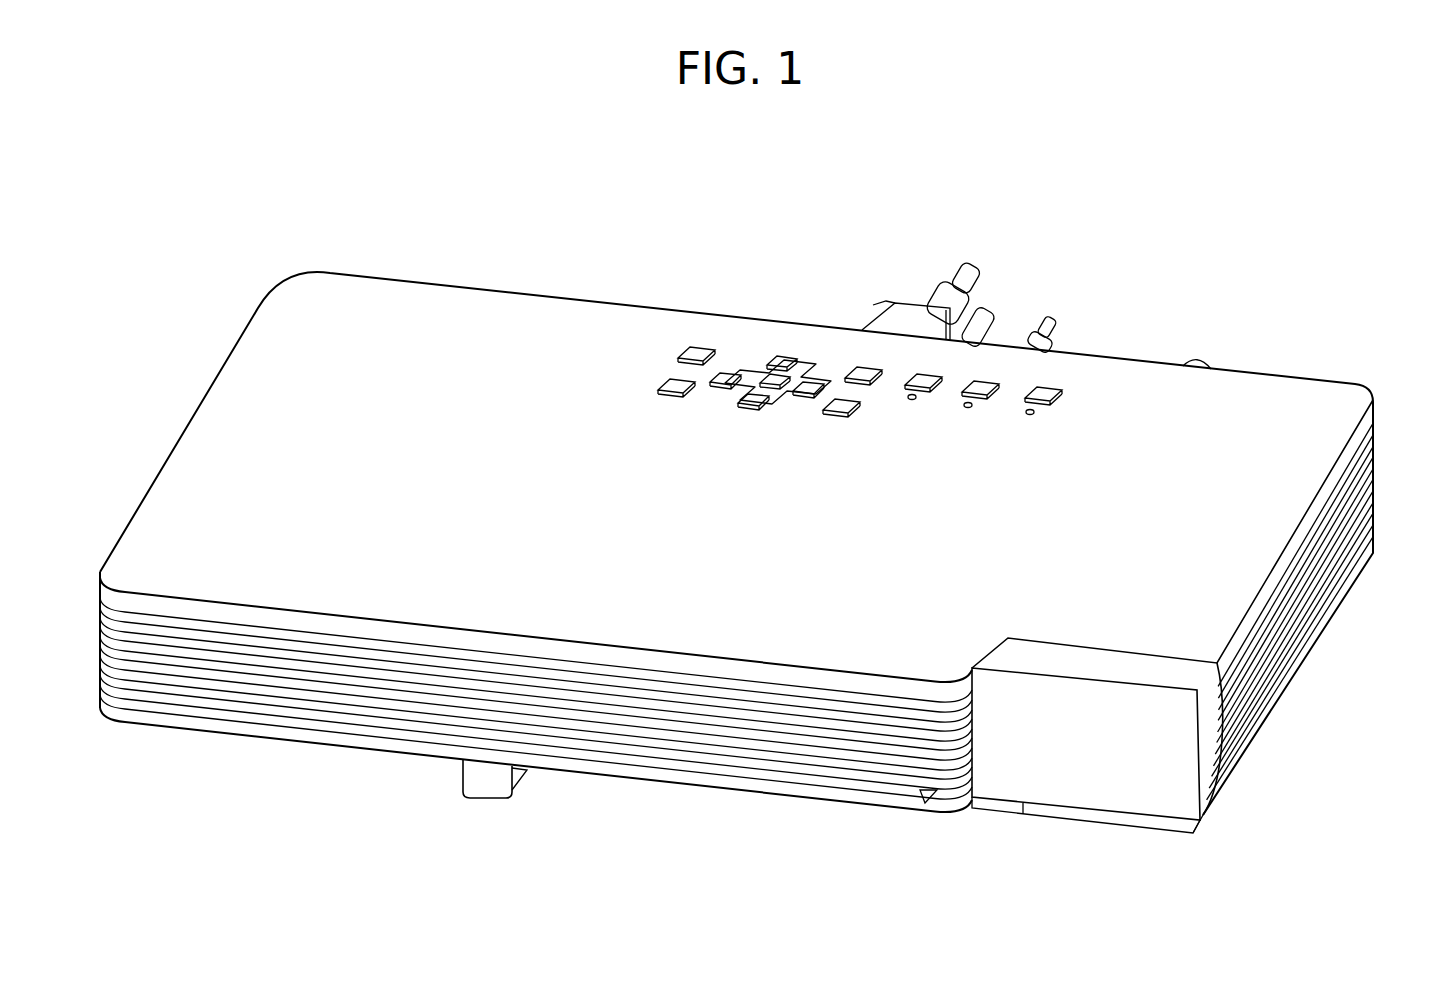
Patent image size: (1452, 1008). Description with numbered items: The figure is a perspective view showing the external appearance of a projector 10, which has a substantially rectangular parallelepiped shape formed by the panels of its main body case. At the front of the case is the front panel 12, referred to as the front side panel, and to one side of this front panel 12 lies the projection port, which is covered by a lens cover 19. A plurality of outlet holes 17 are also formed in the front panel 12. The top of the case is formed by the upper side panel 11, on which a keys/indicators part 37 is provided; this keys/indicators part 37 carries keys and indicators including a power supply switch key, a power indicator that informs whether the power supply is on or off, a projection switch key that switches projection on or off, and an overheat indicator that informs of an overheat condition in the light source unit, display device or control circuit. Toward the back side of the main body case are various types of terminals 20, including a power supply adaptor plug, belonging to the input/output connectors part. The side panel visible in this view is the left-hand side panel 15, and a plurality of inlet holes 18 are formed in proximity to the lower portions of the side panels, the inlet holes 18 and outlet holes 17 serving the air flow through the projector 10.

The projector 10 is at (693, 247).
The upper side panel 11 is at (485, 322).
The front panel 12 is at (618, 760).
The left-hand side panel 15 is at (1297, 657).
The outlet holes 17 is at (732, 782).
The inlet holes 18 is at (1332, 573).
The lens cover 19 is at (1125, 785).
The terminals 20 is at (1008, 287).
The keys/indicators part 37 is at (783, 330).